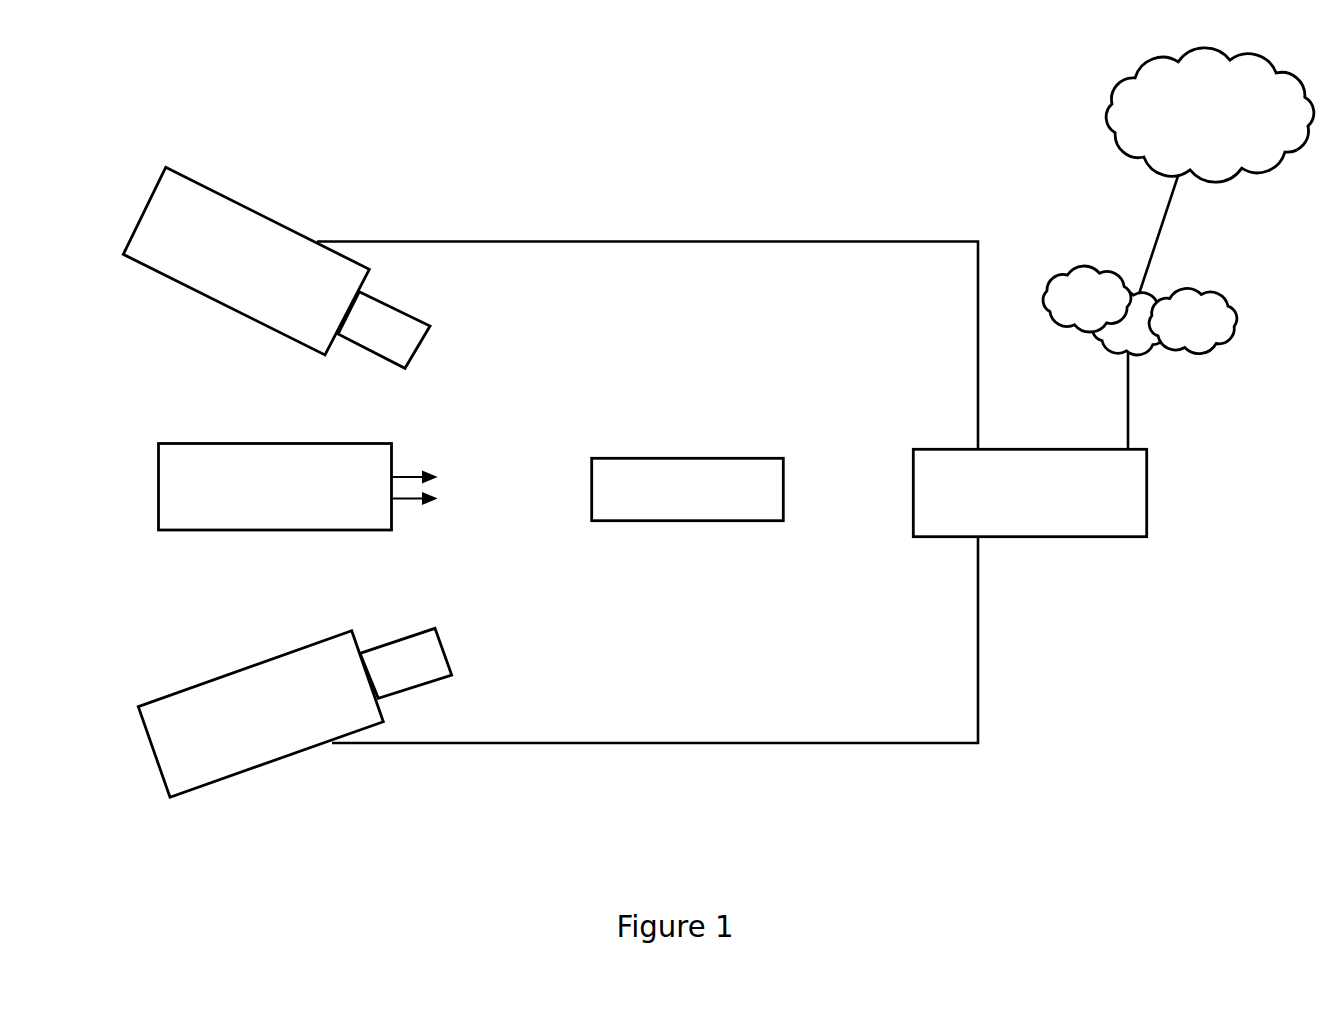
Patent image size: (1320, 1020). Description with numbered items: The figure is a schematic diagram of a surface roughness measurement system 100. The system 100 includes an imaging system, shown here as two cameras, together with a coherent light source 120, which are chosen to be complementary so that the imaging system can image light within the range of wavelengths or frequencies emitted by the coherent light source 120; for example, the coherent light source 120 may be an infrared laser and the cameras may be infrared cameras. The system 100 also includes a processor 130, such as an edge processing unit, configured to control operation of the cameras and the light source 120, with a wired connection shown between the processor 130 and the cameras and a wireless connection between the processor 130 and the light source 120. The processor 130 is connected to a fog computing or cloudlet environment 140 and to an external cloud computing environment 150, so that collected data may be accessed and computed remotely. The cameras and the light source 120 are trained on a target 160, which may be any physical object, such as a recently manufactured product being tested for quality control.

The surface roughness measurement system 100 is at (1113, 810).
The coherent light source 120 is at (246, 502).
The processor 130 is at (999, 507).
The fog computing or cloudlet environment 140 is at (1188, 328).
The external cloud computing environment 150 is at (1170, 116).
The target 160 is at (656, 502).